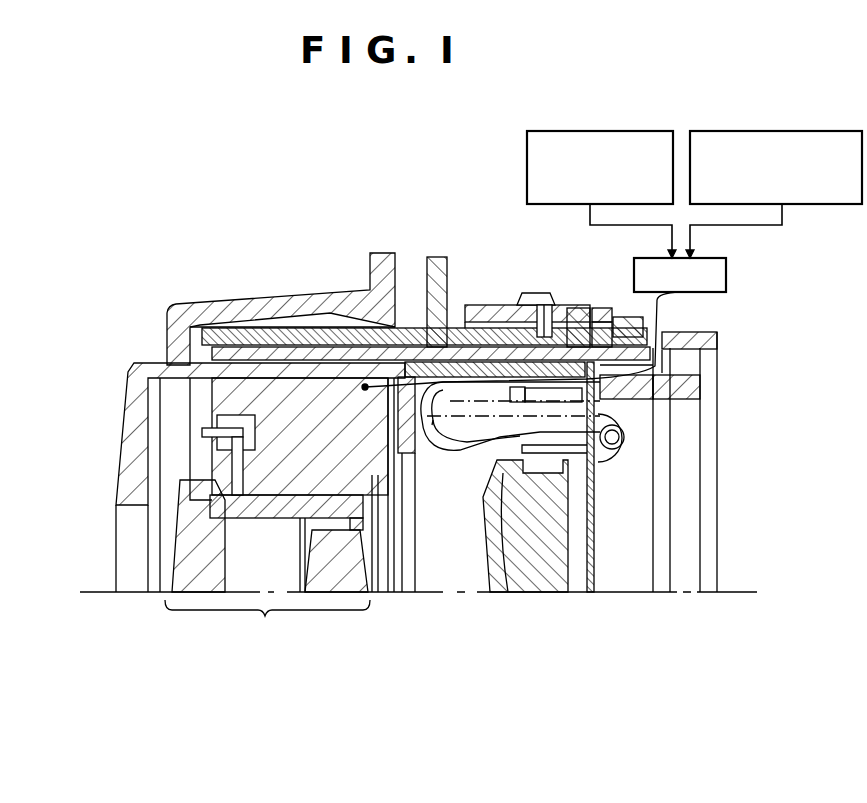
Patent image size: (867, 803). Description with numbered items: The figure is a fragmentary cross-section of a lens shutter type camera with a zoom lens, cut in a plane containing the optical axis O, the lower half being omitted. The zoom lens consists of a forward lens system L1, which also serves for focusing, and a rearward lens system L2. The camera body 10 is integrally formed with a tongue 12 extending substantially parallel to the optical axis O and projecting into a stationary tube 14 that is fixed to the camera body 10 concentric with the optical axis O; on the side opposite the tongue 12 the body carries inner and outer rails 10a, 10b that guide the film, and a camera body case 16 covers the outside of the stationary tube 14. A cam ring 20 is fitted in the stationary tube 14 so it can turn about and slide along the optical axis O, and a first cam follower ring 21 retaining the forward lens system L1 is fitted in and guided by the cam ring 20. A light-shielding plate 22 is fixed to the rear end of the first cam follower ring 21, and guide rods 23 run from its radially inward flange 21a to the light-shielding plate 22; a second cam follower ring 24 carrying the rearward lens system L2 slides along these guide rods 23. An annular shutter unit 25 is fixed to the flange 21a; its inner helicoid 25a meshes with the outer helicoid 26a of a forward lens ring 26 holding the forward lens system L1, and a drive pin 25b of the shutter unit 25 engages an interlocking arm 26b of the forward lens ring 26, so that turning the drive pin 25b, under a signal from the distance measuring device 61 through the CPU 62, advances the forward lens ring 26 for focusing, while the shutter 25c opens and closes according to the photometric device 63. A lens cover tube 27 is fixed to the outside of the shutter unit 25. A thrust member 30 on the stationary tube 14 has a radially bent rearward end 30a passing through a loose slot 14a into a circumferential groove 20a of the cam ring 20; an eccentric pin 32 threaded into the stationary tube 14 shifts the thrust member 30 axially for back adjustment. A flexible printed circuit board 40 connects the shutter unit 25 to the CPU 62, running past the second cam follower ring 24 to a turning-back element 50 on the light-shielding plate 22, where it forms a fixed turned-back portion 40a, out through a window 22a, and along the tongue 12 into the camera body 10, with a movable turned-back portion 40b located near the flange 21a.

The camera body 10 is at (663, 447).
The inner rail 10a is at (698, 387).
The outer rail 10b is at (707, 342).
The tongue 12 is at (636, 399).
The stationary tube 14 is at (447, 330).
The circumferential loose slot 14a is at (598, 308).
The camera body case 16 is at (313, 305).
The cam ring 20 is at (410, 328).
The circumferential groove 20a is at (560, 308).
The first cam follower ring 21 is at (470, 377).
The flange 21a is at (395, 580).
The light-shielding plate 22 is at (595, 552).
The window 22a is at (665, 402).
The guide rods 23 is at (485, 478).
The second cam follower ring 24 is at (507, 582).
The shutter unit 25 is at (273, 405).
The helicoid 25a is at (293, 495).
The drive pin 25b is at (212, 420).
The shutter 25c is at (376, 585).
The forward lens ring 26 is at (190, 487).
The helicoid 26a is at (343, 494).
The interlocking arm 26b is at (190, 455).
The lens cover tube 27 is at (138, 362).
The thrust member 30 is at (500, 305).
The rearward end 30a is at (614, 332).
The eccentric pin 32 is at (527, 300).
The flexible printed circuit board 40 is at (688, 298).
The fixed turned-back portion 40a is at (622, 449).
The movable turned-back portion 40b is at (483, 408).
The turning-back element 50 is at (650, 456).
The distance measuring device 61 is at (648, 104).
The CPU 62 is at (720, 258).
The photometric device 63 is at (826, 104).
The forward lens system L1 is at (267, 628).
The rearward lens system L2 is at (550, 582).
The optical axis O is at (80, 592).